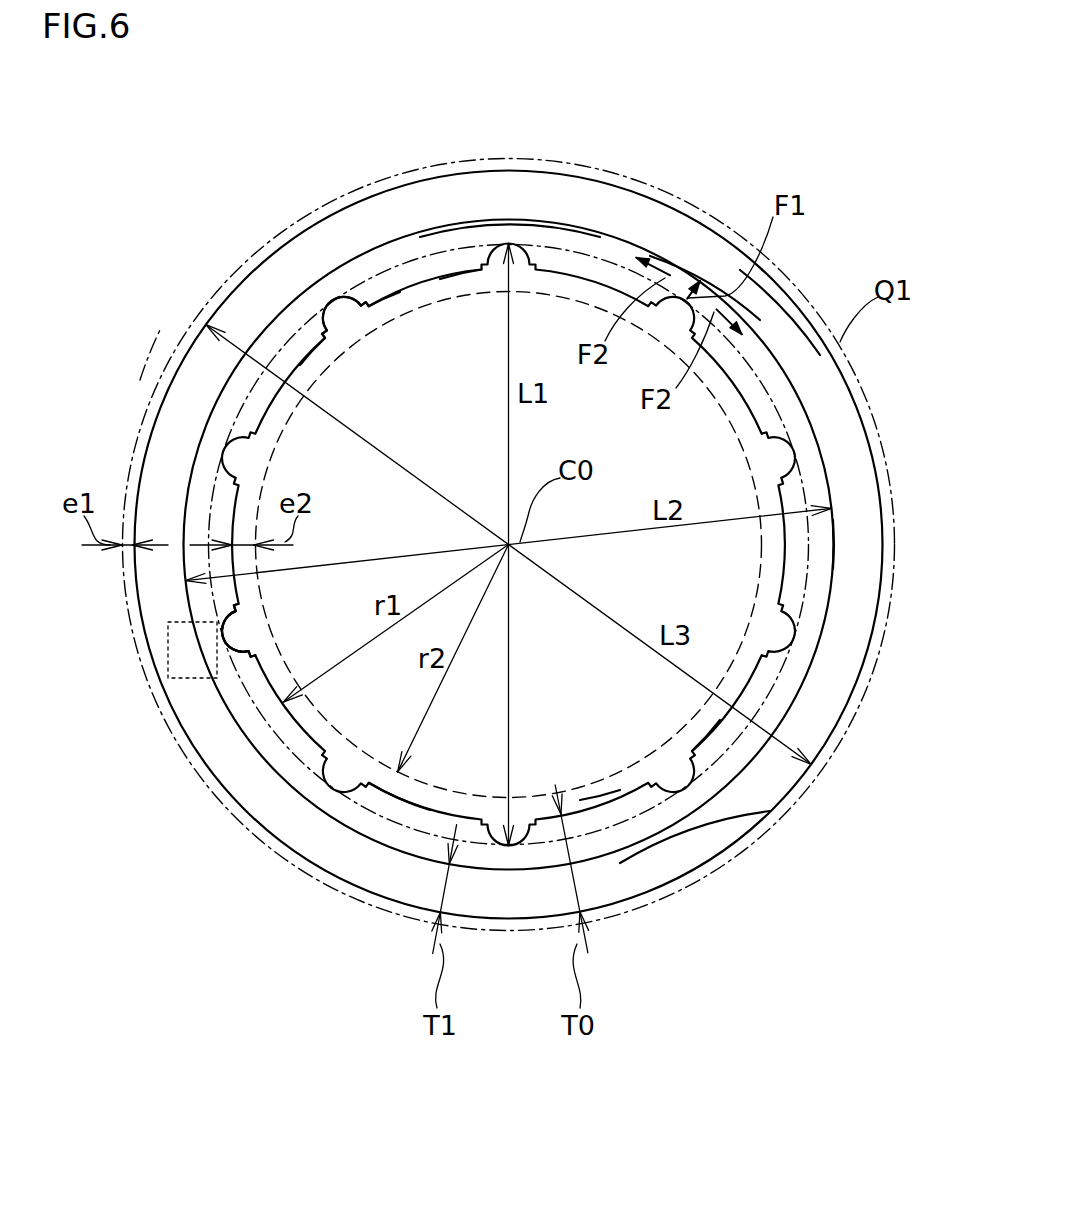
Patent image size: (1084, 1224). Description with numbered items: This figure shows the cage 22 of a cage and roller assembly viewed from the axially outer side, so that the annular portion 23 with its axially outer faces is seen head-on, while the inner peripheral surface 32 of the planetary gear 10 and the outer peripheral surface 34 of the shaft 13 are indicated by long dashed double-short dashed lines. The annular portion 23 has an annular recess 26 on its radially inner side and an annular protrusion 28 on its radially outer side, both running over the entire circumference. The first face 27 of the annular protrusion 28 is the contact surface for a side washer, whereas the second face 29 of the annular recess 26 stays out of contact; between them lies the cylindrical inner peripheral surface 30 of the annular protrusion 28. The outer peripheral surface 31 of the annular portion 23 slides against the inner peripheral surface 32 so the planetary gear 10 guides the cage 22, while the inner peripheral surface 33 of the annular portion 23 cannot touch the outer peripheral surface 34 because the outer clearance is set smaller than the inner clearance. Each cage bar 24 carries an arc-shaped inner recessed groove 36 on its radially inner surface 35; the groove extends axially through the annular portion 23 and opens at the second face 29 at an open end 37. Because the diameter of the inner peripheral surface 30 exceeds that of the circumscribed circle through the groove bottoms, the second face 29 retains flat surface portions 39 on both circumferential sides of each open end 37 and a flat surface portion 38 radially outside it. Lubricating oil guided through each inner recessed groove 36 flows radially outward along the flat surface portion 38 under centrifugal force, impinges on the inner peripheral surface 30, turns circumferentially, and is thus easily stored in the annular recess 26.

The planetary gear 10 is at (215, 794).
The shaft 13 is at (285, 670).
The cage 22 is at (762, 823).
The annular portion 23 is at (597, 807).
The cage bar 24 is at (170, 677).
The annular recess 26 is at (268, 382).
The first face 27 is at (700, 242).
The annular protrusion 28 is at (772, 310).
The second face 29 is at (471, 236).
The inner peripheral surface of the annular protrusion 30 is at (836, 582).
The outer peripheral surface of the annular portion 31 is at (690, 875).
The inner peripheral surface of the planetary gear 32 is at (142, 410).
The inner peripheral surface of the annular portion 33 is at (440, 279).
The outer peripheral surface of the shaft 34 is at (418, 782).
The radially inner surface of the cage bar 35 is at (254, 637).
The inner recessed groove 36 is at (224, 625).
The open end 37 is at (353, 310).
The flat surface portion 38 is at (323, 293).
The flat surface portions 39 is at (372, 288).